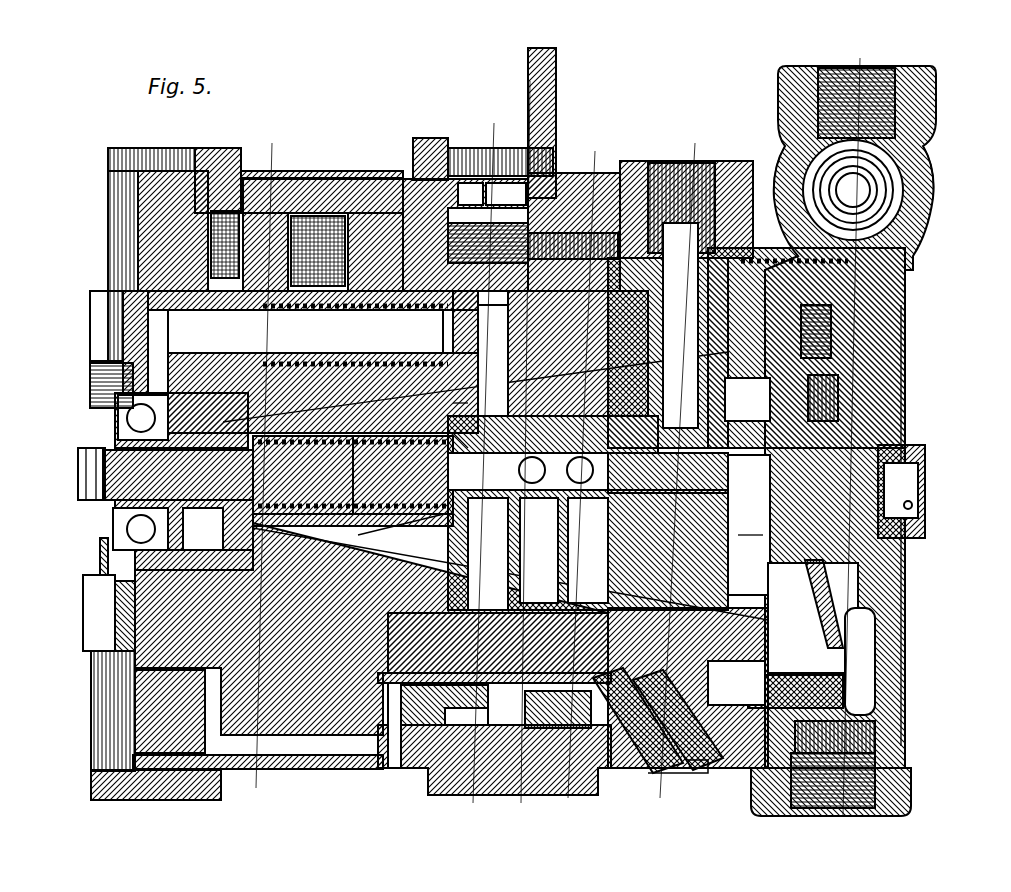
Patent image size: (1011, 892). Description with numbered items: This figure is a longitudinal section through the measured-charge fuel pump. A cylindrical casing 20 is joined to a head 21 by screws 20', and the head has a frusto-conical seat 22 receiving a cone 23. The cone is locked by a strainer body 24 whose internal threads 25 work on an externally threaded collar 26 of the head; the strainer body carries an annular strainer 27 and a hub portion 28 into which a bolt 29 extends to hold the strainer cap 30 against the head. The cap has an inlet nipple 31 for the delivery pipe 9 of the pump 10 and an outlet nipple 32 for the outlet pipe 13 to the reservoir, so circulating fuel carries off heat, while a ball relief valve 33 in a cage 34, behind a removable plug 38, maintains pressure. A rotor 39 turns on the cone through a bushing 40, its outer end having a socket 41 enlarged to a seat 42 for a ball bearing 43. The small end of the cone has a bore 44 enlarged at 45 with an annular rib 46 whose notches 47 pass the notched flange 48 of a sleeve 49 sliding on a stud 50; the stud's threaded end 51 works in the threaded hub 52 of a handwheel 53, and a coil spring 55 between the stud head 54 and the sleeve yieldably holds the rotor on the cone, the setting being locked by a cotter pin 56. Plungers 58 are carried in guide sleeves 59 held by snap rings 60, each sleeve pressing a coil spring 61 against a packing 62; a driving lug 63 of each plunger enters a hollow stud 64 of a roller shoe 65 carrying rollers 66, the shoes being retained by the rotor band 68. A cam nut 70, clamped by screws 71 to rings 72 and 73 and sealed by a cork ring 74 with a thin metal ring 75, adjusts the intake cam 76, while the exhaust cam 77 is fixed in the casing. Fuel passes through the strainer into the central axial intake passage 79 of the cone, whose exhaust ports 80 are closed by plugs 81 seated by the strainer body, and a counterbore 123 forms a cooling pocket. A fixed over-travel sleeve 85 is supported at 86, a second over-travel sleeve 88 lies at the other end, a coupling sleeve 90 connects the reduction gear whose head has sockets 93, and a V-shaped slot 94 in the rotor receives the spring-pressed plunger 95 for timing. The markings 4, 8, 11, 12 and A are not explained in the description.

The coil assembly 4 is at (240, 200).
The housing 8 is at (900, 272).
The delivery pipe 9 is at (597, 143).
The pump 10 is at (493, 115).
The section line 11 is at (527, 73).
The section line 12 is at (695, 135).
The outlet pipe 13 is at (862, 50).
The cylindrical casing 20 is at (429, 206).
The screws 20' is at (574, 232).
The head 21 is at (612, 170).
The frusto-conical seat 22 is at (722, 348).
The cone 23 is at (588, 531).
The strainer body 24 is at (870, 330).
The internal threads 25 is at (905, 242).
The externally threaded collar 26 is at (705, 658).
The annular strainer 27 is at (850, 722).
The hub portion 28 is at (880, 410).
The bolt 29 is at (917, 452).
The strainer cap 30 is at (875, 592).
The inlet nipple 31 is at (880, 770).
The outlet nipple 32 is at (905, 65).
The relief valve 33 is at (862, 182).
The cage 34 is at (878, 200).
The plug 38 is at (578, 353).
The rotor 39 is at (371, 638).
The lining or bushing 40 is at (441, 413).
The socket 41 is at (200, 535).
The seat 42 is at (184, 550).
The ball bearing 43 is at (92, 548).
The longitudinal bore 44 is at (403, 523).
The enlargement 45 is at (353, 541).
The annular rib 46 is at (323, 362).
The notches 47 is at (475, 387).
The notched flange 48 is at (303, 475).
The sleeve 49 is at (178, 475).
The stud 50 is at (355, 475).
The external threads 51 is at (110, 505).
The internally threaded hub 52 is at (110, 405).
The handwheel 53 is at (118, 345).
The head 54 is at (446, 435).
The coil spring 55 is at (510, 565).
The cotter pin 56 is at (80, 445).
The plungers 58 is at (310, 331).
The plunger guide sleeves 59 is at (140, 292).
The snap rings 60 is at (181, 409).
The coil spring 61 is at (355, 335).
The packing 62 is at (411, 331).
The driving lug 63 is at (240, 240).
The hollow studs 64 is at (160, 205).
The roller shoe 65 is at (200, 178).
The roller 66 is at (205, 228).
The rotor band 68 is at (278, 190).
The cam nut 70 is at (496, 170).
The screws 71 is at (418, 166).
The ring 72 is at (432, 138).
The ring 73 is at (546, 102).
The cork ring 74 is at (456, 176).
The thin metal ring 75 is at (488, 206).
The intake cam 76 is at (533, 250).
The exhaust cam 77 is at (150, 195).
The central axial intake passage 79 is at (668, 475).
The exhaust ports 80 is at (553, 434).
The plugs 81 is at (747, 486).
The fixed over-travel sleeve 85 is at (472, 332).
The support 86 is at (520, 683).
The over-travel sleeve 88 is at (330, 747).
The coupling sleeve 90 is at (125, 140).
The sockets 93 is at (88, 303).
The V-shaped slot 94 is at (605, 668).
The spring pressed plunger 95 is at (650, 766).
The counterbore 123 is at (750, 523).
The bolt A is at (700, 172).